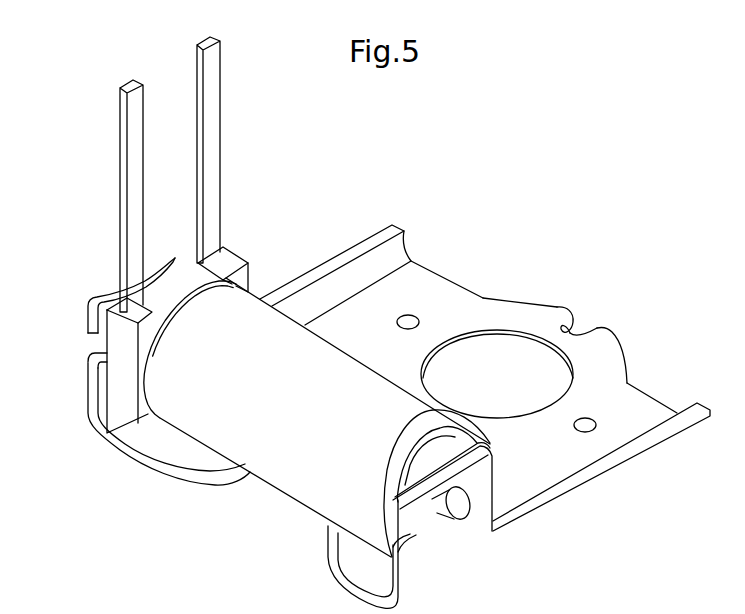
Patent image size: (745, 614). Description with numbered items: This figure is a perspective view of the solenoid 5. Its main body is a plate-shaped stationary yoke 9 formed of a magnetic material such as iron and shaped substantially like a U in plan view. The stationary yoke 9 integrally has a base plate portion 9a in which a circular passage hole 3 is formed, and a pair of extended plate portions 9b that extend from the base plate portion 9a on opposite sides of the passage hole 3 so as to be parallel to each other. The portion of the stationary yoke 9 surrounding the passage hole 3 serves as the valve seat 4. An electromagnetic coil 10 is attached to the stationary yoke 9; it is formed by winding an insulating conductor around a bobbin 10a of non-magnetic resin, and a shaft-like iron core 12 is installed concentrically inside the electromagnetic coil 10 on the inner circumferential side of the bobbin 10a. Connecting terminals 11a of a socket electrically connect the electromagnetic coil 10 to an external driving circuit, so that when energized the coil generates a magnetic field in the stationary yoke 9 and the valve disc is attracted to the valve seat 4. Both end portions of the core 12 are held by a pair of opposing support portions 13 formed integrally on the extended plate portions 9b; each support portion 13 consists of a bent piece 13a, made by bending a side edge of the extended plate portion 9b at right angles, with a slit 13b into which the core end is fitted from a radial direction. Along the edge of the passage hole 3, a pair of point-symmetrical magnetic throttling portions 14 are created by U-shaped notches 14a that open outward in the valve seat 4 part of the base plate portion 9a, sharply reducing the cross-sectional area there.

The passage hole 3 is at (495, 362).
The valve seat 4 is at (583, 365).
The solenoid 5 is at (171, 500).
The stationary yoke 9 is at (433, 262).
The base plate portion 9a is at (643, 400).
The extended plate portions 9b is at (152, 447).
The electromagnetic coil 10 is at (305, 462).
The bobbin 10a is at (397, 445).
The connecting terminals 11a is at (196, 52).
The core 12 is at (463, 508).
The support portions 13 is at (88, 386).
The bent piece 13a is at (100, 306).
The slit 13b is at (92, 340).
The magnetic throttling portions 14 is at (550, 328).
The notches 14a is at (569, 327).